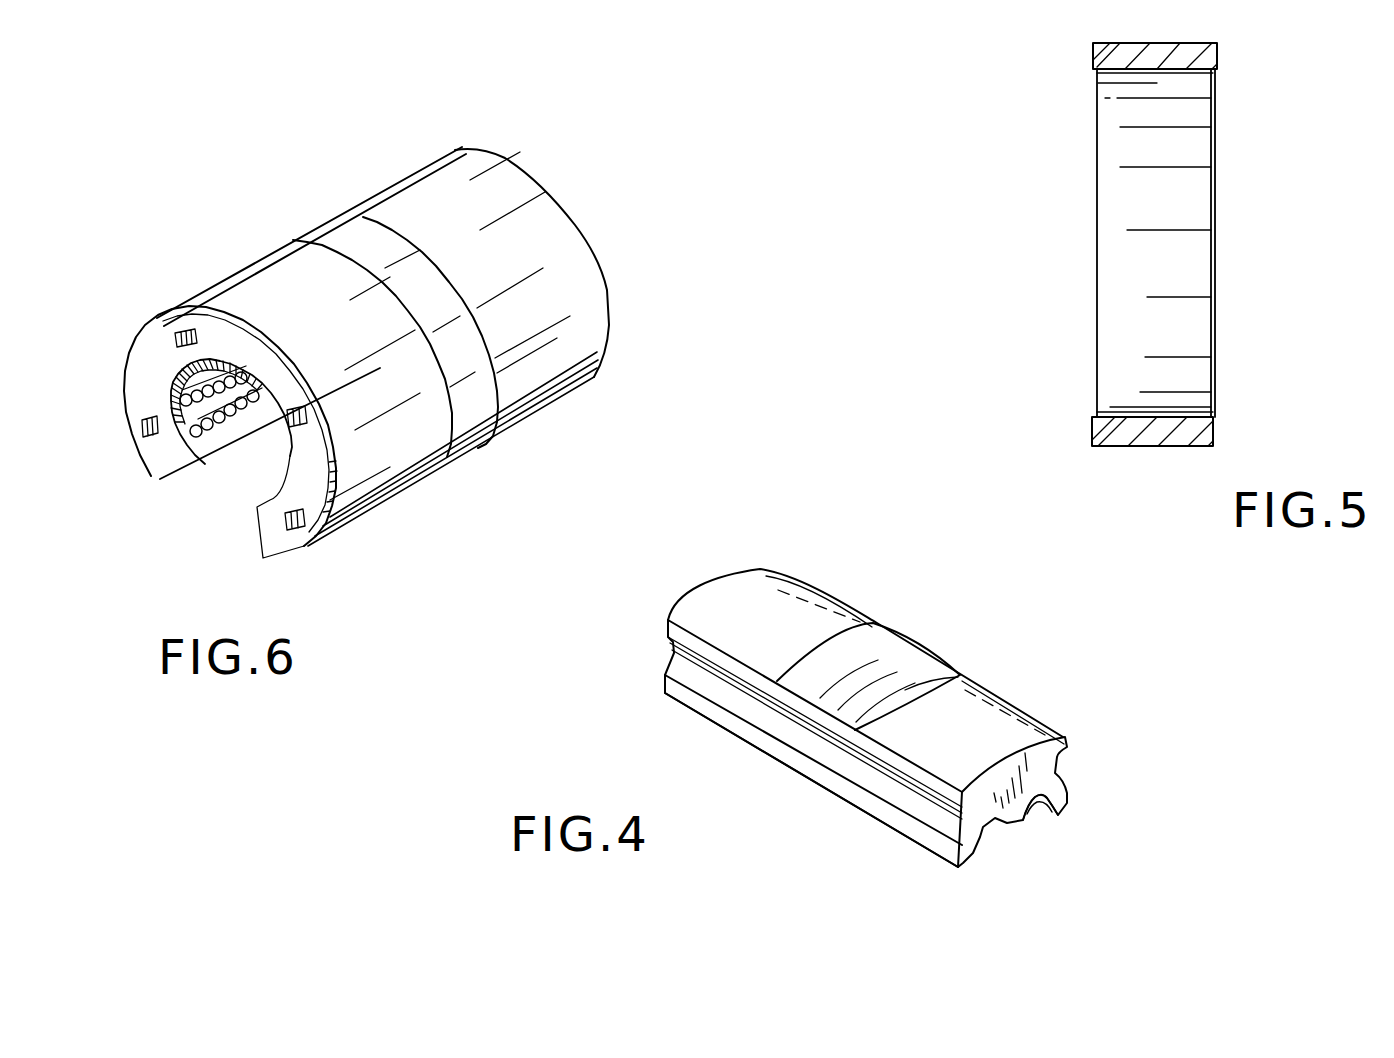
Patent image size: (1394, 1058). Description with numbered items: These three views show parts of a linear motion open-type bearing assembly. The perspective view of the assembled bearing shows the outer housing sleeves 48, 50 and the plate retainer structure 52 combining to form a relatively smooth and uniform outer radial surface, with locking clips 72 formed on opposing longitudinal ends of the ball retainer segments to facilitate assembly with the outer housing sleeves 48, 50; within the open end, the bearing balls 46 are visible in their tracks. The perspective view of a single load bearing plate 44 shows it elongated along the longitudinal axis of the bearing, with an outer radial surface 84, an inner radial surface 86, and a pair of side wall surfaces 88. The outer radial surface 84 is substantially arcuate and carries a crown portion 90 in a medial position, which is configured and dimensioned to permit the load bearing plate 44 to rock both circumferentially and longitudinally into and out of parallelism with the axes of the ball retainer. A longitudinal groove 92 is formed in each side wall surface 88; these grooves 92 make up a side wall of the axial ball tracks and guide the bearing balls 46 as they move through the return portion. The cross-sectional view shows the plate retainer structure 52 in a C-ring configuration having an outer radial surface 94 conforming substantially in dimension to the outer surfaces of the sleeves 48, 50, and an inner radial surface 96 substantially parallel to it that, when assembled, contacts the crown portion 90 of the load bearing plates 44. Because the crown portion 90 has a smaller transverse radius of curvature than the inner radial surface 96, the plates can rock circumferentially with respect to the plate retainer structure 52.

In FIG. 4, the load bearing plate 44 is at (1040, 733).
In FIG. 6, the bearing balls 46 is at (207, 433).
In FIG. 6, the outer housing sleeve 48 is at (435, 185).
In FIG. 6, the outer housing sleeve 50 is at (262, 282).
In FIG. 6, the plate retainer structure 52 is at (347, 233).
In FIG. 5, the plate retainer structure 52 is at (1213, 240).
In FIG. 6, the locking clips 72 is at (160, 326).
In FIG. 4, the outer radial surface 84 is at (773, 605).
In FIG. 4, the inner radial surface 86 is at (990, 820).
In FIG. 4, the side wall surfaces 88 is at (777, 753).
In FIG. 4, the crown portion 90 is at (888, 653).
In FIG. 4, the longitudinal groove 92 is at (707, 678).
In FIG. 5, the outer radial surface 94 is at (1122, 42).
In FIG. 5, the inner radial surface 96 is at (1157, 70).